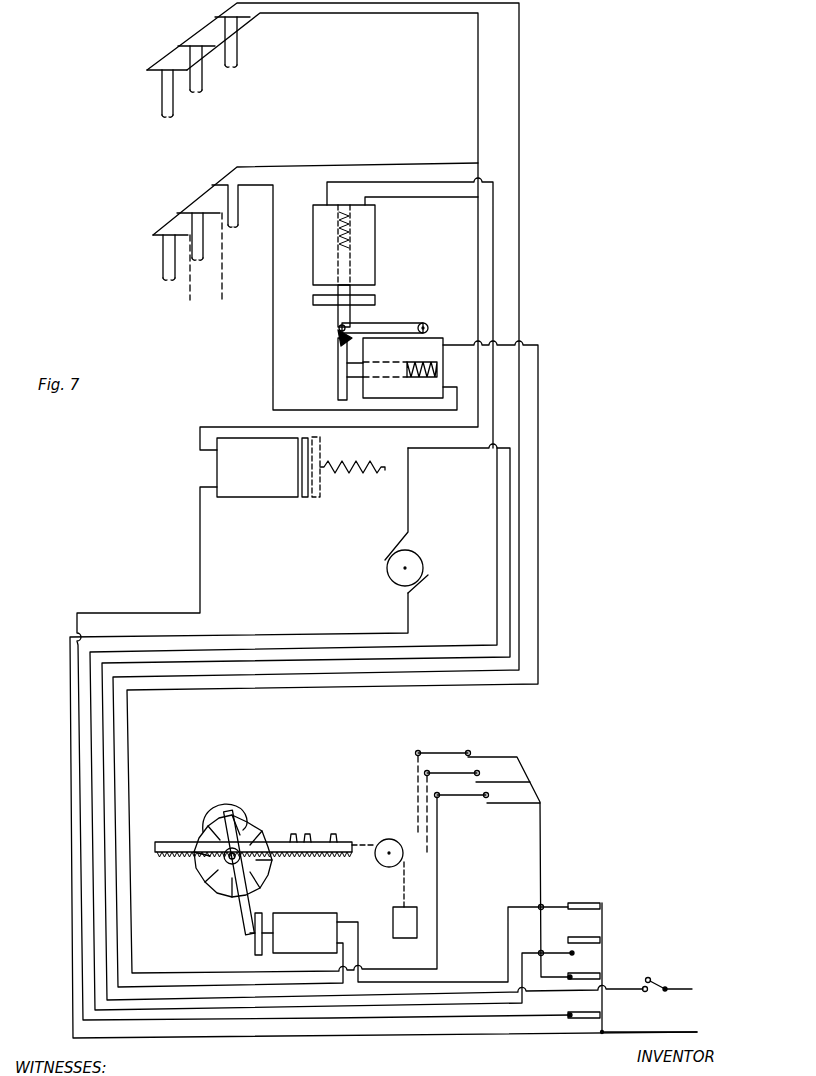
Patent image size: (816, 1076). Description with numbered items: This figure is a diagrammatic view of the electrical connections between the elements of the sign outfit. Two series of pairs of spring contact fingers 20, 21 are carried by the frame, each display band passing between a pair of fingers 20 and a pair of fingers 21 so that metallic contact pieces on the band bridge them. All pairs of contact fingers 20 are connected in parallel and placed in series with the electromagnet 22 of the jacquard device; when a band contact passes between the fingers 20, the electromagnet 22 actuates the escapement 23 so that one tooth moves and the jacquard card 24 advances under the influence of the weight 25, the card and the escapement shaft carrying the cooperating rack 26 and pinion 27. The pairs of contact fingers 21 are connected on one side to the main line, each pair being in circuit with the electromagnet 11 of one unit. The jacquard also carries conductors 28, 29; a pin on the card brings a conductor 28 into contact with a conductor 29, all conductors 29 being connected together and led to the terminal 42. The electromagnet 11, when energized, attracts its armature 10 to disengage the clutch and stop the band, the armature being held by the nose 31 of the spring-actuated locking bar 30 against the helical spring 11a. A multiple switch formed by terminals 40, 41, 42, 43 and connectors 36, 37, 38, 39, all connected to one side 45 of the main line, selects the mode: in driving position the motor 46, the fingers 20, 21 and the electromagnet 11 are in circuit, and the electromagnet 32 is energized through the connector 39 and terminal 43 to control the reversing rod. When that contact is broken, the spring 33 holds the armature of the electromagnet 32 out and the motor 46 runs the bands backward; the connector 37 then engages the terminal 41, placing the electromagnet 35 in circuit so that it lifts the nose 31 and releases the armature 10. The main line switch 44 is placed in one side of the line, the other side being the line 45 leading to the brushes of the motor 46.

The armature 10 is at (338, 390).
The electromagnet 11 is at (440, 356).
The spring 11a is at (418, 360).
The contact fingers 20 is at (164, 118).
The contact fingers 21 is at (166, 282).
The electromagnet 22 is at (327, 925).
The escapement 23 is at (236, 810).
The jacquard card 24 is at (342, 842).
The weight 25 is at (405, 935).
The rack 26 is at (175, 855).
The pinion 27 is at (243, 863).
The conductor 28 is at (443, 751).
The conductor 29 is at (500, 757).
The locking bar 30 is at (392, 325).
The nose 31 is at (338, 342).
The electromagnet 32 is at (223, 470).
The spring 33 is at (350, 480).
The electromagnet 35 is at (363, 268).
The connector 36 is at (601, 902).
The connector 37 is at (602, 940).
The connector 38 is at (603, 975).
The connector 39 is at (602, 1014).
The terminal 40 is at (568, 903).
The terminal 41 is at (571, 952).
The terminal 42 is at (569, 979).
The terminal 43 is at (569, 1018).
The main line switch 44 is at (673, 985).
The main line side 45 is at (682, 1030).
The motor 46 is at (417, 565).